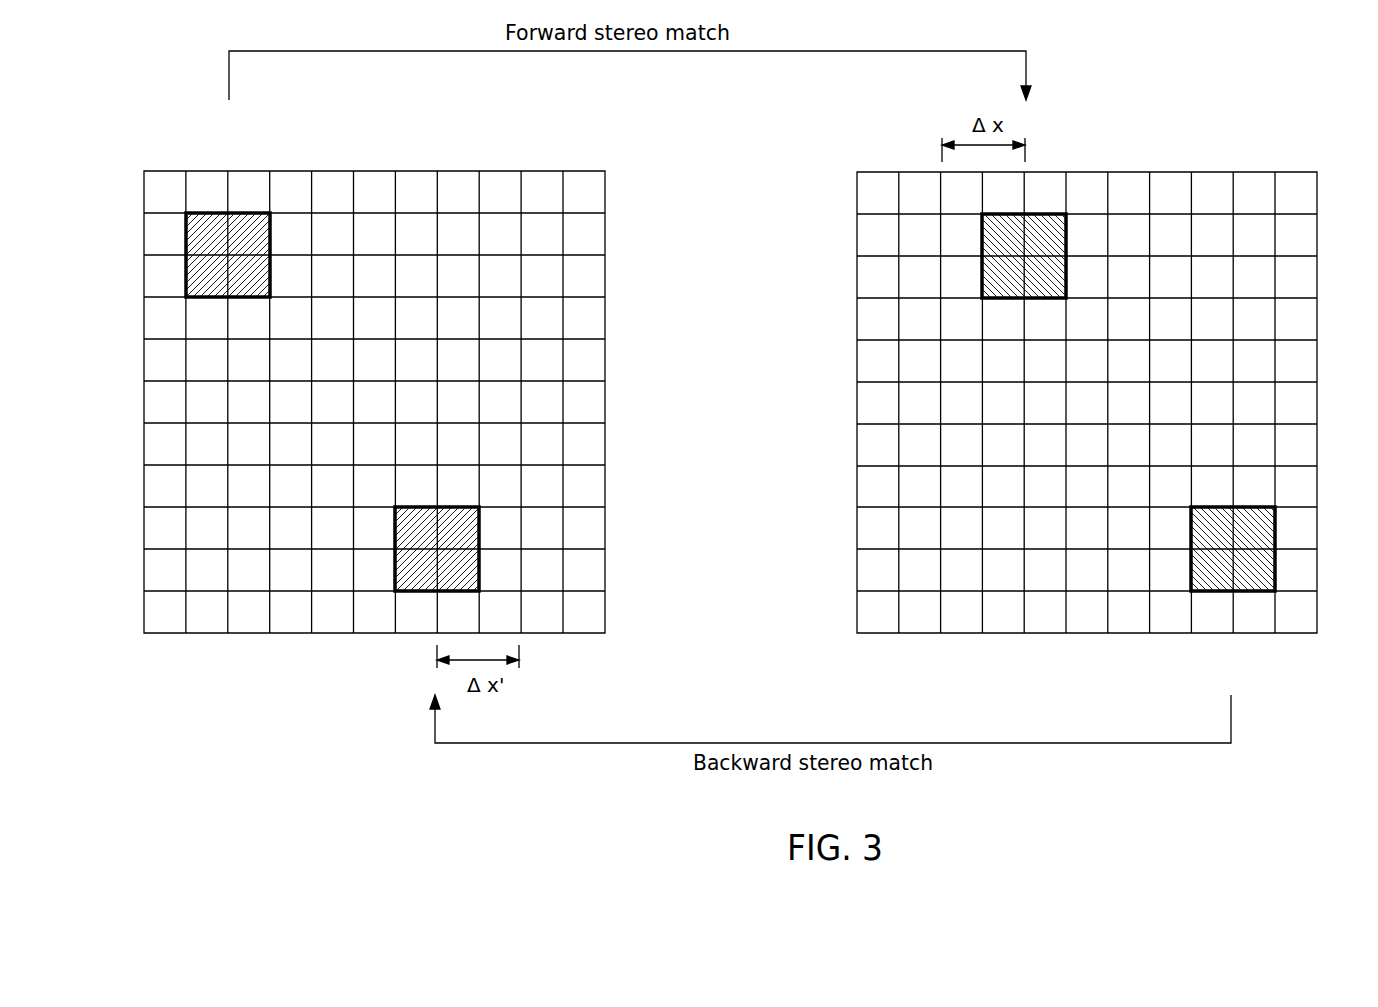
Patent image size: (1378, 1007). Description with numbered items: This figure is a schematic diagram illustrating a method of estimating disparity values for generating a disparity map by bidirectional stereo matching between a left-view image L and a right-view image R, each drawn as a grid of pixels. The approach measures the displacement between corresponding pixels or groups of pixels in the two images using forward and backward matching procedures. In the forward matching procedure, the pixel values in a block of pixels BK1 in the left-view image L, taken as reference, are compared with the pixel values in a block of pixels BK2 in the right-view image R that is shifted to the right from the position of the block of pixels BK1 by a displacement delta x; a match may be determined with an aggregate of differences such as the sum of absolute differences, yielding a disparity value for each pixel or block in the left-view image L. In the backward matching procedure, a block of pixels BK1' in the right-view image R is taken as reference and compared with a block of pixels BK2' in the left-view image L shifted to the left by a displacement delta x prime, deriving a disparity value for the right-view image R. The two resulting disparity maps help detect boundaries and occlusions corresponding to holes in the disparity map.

The left-view image L is at (143, 400).
The right-view image R is at (1320, 402).
The block of pixels BK1 is at (228, 210).
The block of pixels BK2 is at (1052, 214).
The block of pixels BK1' is at (1261, 591).
The block of pixels BK2' is at (406, 590).